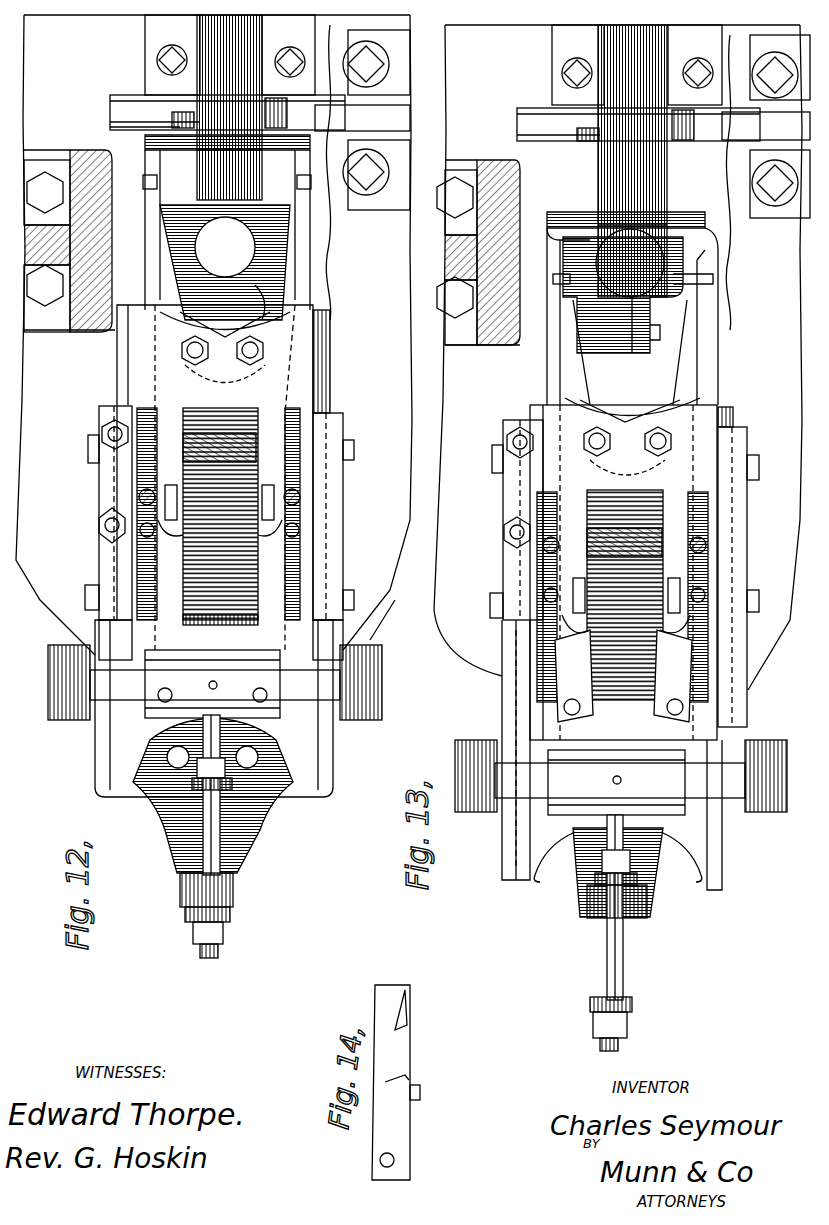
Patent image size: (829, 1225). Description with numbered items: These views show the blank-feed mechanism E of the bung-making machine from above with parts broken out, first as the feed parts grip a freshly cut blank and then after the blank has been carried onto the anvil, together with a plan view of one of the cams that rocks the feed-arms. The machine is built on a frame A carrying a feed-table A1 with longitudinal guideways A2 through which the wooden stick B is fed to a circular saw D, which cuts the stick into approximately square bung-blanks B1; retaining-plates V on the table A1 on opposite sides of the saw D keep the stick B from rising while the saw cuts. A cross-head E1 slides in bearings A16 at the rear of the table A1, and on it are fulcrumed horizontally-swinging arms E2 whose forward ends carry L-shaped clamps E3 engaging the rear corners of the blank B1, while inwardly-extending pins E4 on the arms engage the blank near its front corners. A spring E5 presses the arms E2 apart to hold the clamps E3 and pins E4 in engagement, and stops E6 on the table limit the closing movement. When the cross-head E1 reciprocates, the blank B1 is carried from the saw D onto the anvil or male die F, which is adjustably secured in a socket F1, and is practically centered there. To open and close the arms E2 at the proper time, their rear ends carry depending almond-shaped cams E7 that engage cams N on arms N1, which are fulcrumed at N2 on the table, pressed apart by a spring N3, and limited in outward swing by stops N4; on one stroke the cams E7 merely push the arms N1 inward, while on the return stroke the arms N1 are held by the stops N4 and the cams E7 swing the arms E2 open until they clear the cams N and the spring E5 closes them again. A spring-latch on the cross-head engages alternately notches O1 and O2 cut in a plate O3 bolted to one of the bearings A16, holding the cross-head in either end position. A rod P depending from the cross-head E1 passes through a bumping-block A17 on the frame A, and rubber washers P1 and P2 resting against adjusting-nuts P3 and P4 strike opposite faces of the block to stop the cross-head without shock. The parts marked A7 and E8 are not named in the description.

In FIG. 12, the frame A is at (214, 335).
In FIG. 13, the frame A is at (618, 363).
In FIG. 12, the feed-table A1 is at (246, 348).
In FIG. 13, the feed-table A1 is at (588, 52).
In FIG. 12, the guideways A2 is at (145, 60).
In FIG. 13, the guideways A2 is at (552, 75).
In FIG. 12, the frame bracket A7 is at (45, 332).
In FIG. 13, the frame bracket A7 is at (460, 345).
In FIG. 12, the bearings A16 is at (330, 505).
In FIG. 13, the bearings A16 is at (740, 650).
In FIG. 12, the bumping-block A17 is at (240, 900).
In FIG. 13, the bumping-block A17 is at (587, 900).
In FIG. 12, the wooden stick B is at (205, 45).
In FIG. 13, the wooden stick B is at (604, 178).
In FIG. 12, the square bung-blank B1 is at (205, 160).
In FIG. 13, the square bung-blank B1 is at (640, 290).
In FIG. 12, the circular saw D is at (125, 112).
In FIG. 13, the circular saw D is at (530, 125).
In FIG. 12, the feed mechanism E is at (225, 356).
In FIG. 13, the feed mechanism E is at (632, 436).
In FIG. 12, the cross-head E1 is at (135, 385).
In FIG. 13, the cross-head E1 is at (545, 420).
In FIG. 12, the horizontally-swinging arms E2 is at (218, 230).
In FIG. 13, the horizontally-swinging arms E2 is at (633, 316).
In FIG. 12, the L-shaped clamps E3 is at (150, 142).
In FIG. 13, the L-shaped clamps E3 is at (575, 228).
In FIG. 12, the pins E4 is at (145, 185).
In FIG. 13, the pins E4 is at (555, 278).
In FIG. 12, the spring E5 is at (225, 445).
In FIG. 13, the spring E5 is at (630, 540).
In FIG. 12, the stops E6 is at (313, 500).
In FIG. 13, the stops E6 is at (722, 560).
In FIG. 12, the almond-shaped cams E7 is at (220, 497).
In FIG. 13, the almond-shaped cams E7 is at (626, 597).
In FIG. 12, the adjusting shaft E8 is at (70, 720).
In FIG. 13, the adjusting shaft E8 is at (475, 812).
In FIG. 12, the anvil or male die F is at (225, 262).
In FIG. 13, the anvil or male die F is at (623, 291).
In FIG. 12, the socket F1 is at (269, 297).
In FIG. 13, the socket F1 is at (643, 341).
In FIG. 12, the cams N is at (220, 516).
In FIG. 13, the cams N is at (640, 660).
In FIG. 14, the cams N is at (412, 1005).
In FIG. 12, the arms N1 is at (218, 514).
In FIG. 13, the arms N1 is at (622, 597).
In FIG. 14, the arms N1 is at (374, 1055).
In FIG. 12, the fulcrum N2 is at (160, 700).
In FIG. 13, the fulcrum N2 is at (623, 676).
In FIG. 14, the fulcrum N2 is at (394, 1165).
In FIG. 12, the spring N3 is at (150, 650).
In FIG. 13, the spring N3 is at (600, 640).
In FIG. 12, the stops N4 is at (292, 535).
In FIG. 13, the stops N4 is at (700, 598).
In FIG. 12, the notch O1 is at (105, 515).
In FIG. 13, the notch O1 is at (510, 532).
In FIG. 12, the notch O2 is at (108, 430).
In FIG. 13, the notch O2 is at (510, 437).
In FIG. 12, the plate O3 is at (95, 450).
In FIG. 13, the plate O3 is at (515, 495).
In FIG. 12, the rod P is at (203, 835).
In FIG. 13, the rod P is at (622, 960).
In FIG. 12, the washers P1 is at (232, 790).
In FIG. 13, the washers P1 is at (650, 880).
In FIG. 12, the washer P2 is at (232, 915).
In FIG. 13, the washer P2 is at (632, 1005).
In FIG. 12, the adjusting-nut P3 is at (198, 790).
In FIG. 13, the adjusting-nut P3 is at (600, 865).
In FIG. 12, the adjusting-nut P4 is at (185, 930).
In FIG. 13, the adjusting-nut P4 is at (593, 1025).
In FIG. 12, the retaining-plates V is at (362, 172).
In FIG. 13, the retaining-plates V is at (766, 182).